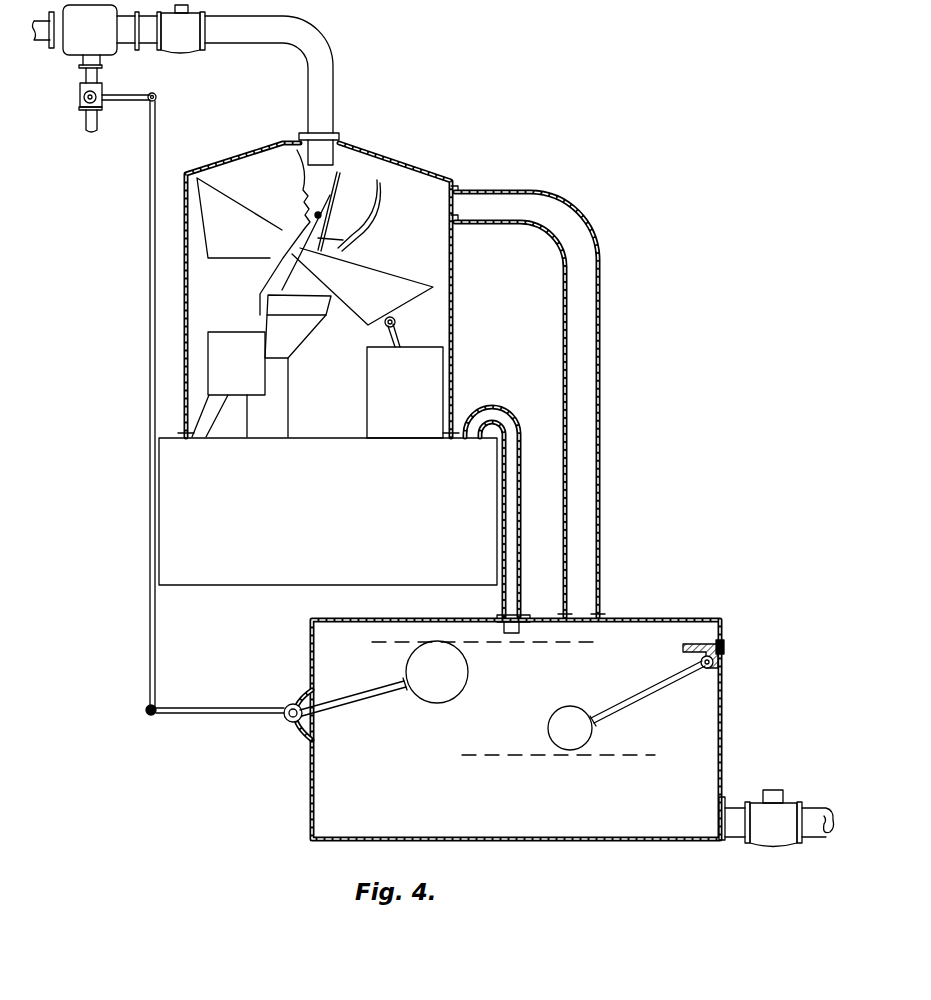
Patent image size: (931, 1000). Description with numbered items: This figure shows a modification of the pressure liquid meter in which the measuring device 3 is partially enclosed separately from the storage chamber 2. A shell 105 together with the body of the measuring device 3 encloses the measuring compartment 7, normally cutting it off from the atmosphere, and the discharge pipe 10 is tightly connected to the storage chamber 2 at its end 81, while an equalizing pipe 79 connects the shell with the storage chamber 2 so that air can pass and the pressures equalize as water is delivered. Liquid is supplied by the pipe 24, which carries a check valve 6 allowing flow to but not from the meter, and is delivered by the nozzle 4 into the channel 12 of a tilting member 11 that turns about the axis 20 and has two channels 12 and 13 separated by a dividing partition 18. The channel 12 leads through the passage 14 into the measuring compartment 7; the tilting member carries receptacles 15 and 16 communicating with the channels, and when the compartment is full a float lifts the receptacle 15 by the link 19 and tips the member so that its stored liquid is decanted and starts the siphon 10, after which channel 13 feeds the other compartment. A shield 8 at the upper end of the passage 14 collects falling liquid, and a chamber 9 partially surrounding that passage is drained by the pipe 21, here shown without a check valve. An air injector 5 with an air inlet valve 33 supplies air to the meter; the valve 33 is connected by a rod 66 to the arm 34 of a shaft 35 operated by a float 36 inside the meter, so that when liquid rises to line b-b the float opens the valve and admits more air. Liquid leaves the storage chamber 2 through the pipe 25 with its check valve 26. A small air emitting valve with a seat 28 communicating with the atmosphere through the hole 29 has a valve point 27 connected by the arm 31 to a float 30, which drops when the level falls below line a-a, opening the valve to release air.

The storage chamber 2 is at (516, 729).
The measuring device 3 is at (168, 432).
The nozzle 4 is at (324, 154).
The air injector 5 is at (82, 40).
The check valve 6 is at (178, 42).
The measuring compartment 7 is at (328, 511).
The shield 8 is at (292, 340).
The chamber 9 is at (225, 340).
The discharge pipe 10 is at (515, 478).
The tilting member 11 is at (344, 238).
The channel 12 is at (308, 192).
The channel 13 is at (347, 180).
The passage 14 is at (275, 407).
The receptacle 15 is at (362, 286).
The receptacle 16 is at (239, 218).
The dividing partition 18 is at (328, 196).
The link 19 is at (398, 337).
The axis 20 is at (322, 218).
The pipe 21 is at (204, 421).
The pipe 24 is at (233, 33).
The pipe 25 is at (735, 840).
The check valve 26 is at (783, 837).
The valve point 27 is at (700, 662).
The seat 28 is at (688, 650).
The hole 29 is at (724, 648).
The float 30 is at (576, 712).
The arm 31 is at (668, 692).
The air inlet valve 33 is at (84, 97).
The arm 34 is at (216, 708).
The shaft 35 is at (289, 721).
The float 36 is at (449, 693).
The rod 66 is at (148, 658).
The equalizing pipe 79 is at (582, 300).
The end of discharge pipe 81 is at (516, 633).
The shell 105 is at (455, 325).